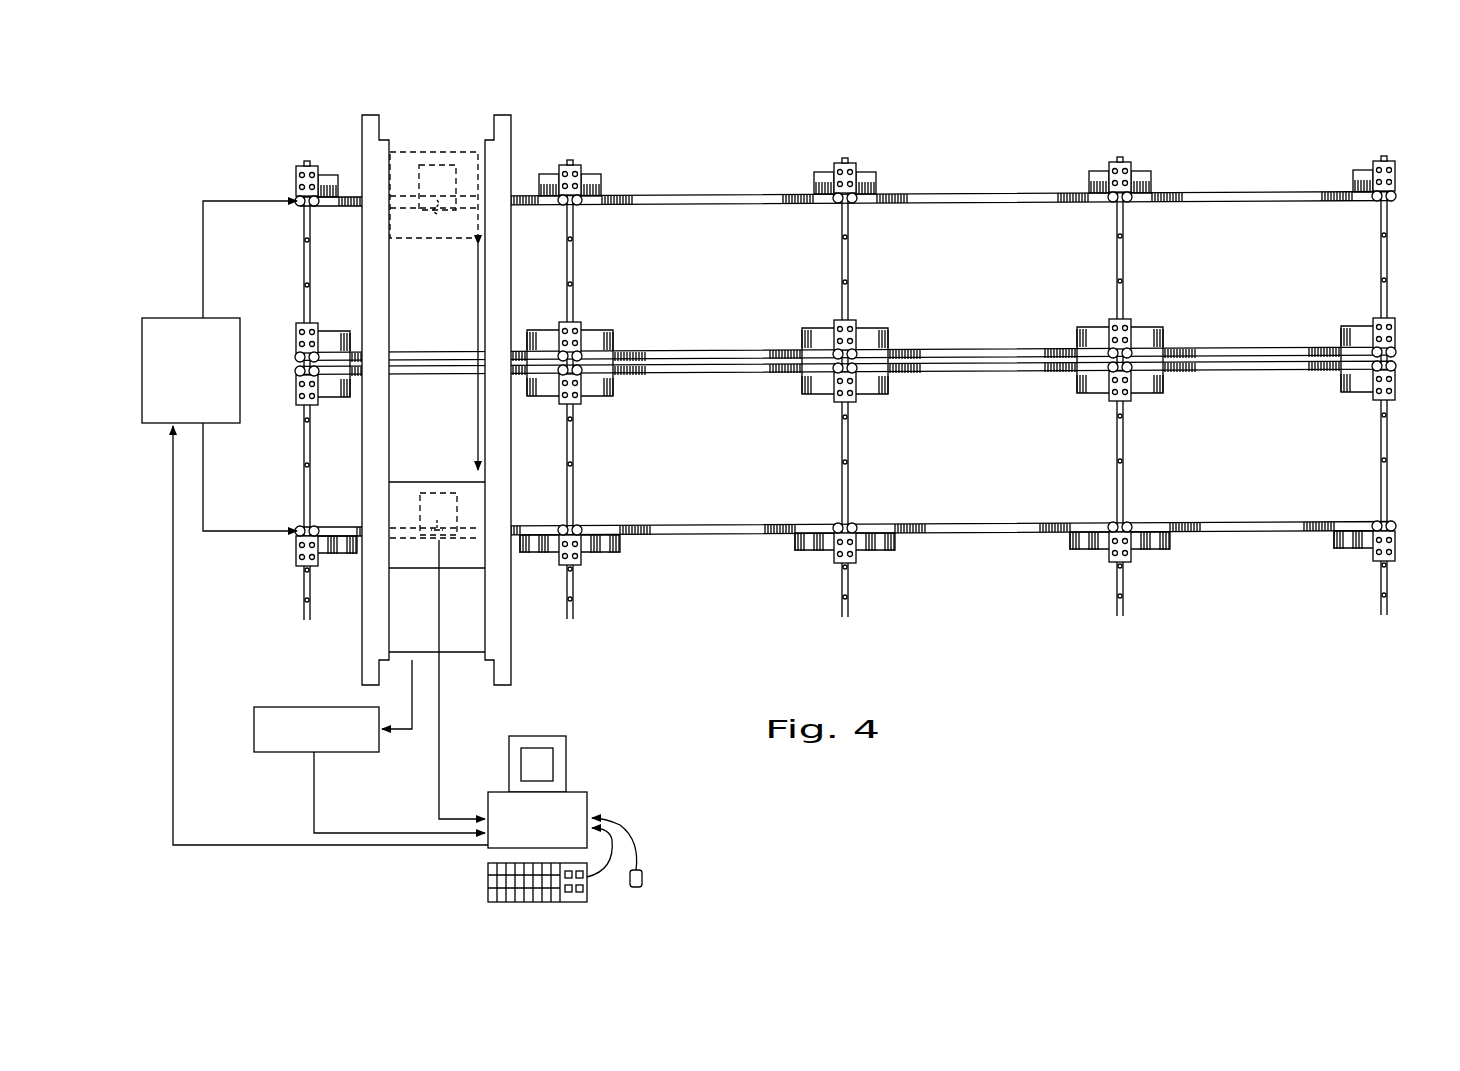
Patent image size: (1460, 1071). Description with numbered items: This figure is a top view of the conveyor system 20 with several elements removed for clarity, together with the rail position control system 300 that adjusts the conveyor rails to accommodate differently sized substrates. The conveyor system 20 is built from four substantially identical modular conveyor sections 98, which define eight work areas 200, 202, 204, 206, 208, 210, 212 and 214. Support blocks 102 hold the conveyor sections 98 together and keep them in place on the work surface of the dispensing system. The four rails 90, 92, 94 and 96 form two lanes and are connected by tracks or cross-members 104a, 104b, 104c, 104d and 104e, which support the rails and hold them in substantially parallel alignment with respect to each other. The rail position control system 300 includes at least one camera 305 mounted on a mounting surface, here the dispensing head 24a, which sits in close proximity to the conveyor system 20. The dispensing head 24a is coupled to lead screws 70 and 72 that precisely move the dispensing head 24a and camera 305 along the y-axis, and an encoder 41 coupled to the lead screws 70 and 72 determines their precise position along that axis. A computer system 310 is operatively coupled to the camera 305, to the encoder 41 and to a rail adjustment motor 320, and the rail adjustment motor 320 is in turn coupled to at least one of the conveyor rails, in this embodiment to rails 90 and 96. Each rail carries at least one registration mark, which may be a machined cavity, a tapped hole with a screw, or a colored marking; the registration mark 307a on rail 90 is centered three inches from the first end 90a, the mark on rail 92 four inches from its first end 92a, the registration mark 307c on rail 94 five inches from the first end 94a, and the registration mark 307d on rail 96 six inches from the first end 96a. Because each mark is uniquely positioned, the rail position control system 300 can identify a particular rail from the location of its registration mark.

The conveyor system 20 is at (968, 136).
The dispensing head 24a is at (430, 515).
The encoder 41 is at (264, 707).
The lead screw 70 is at (384, 140).
The lead screw 72 is at (491, 115).
The conveyor rail 90 is at (1400, 524).
The first end of rail 90 90a is at (312, 527).
The conveyor rail 92 is at (1400, 366).
The first end of rail 92 92a is at (298, 371).
The conveyor rail 94 is at (1400, 352).
The first end of rail 94 94a is at (298, 357).
The conveyor rail 96 is at (1400, 196).
The first end of rail 96 96a is at (312, 212).
The modular conveyor section 98 is at (690, 195).
The support block 102 is at (583, 175).
The cross-member 104a is at (303, 245).
The cross-member 104b is at (573, 235).
The cross-member 104c is at (849, 245).
The cross-member 104d is at (1124, 247).
The cross-member 104e is at (1388, 247).
The work area 200 is at (556, 474).
The work area 202 is at (746, 459).
The work area 204 is at (1001, 459).
The work area 206 is at (1291, 456).
The work area 208 is at (556, 289).
The work area 210 is at (746, 286).
The work area 212 is at (1001, 286).
The work area 214 is at (1291, 286).
The rail position control system 300 is at (577, 819).
The camera 305 is at (441, 545).
The registration mark 307a is at (437, 530).
The registration mark 307c is at (445, 335).
The registration mark 307d is at (445, 396).
The computer system 310 is at (486, 864).
The rail adjustment motor 320 is at (160, 318).